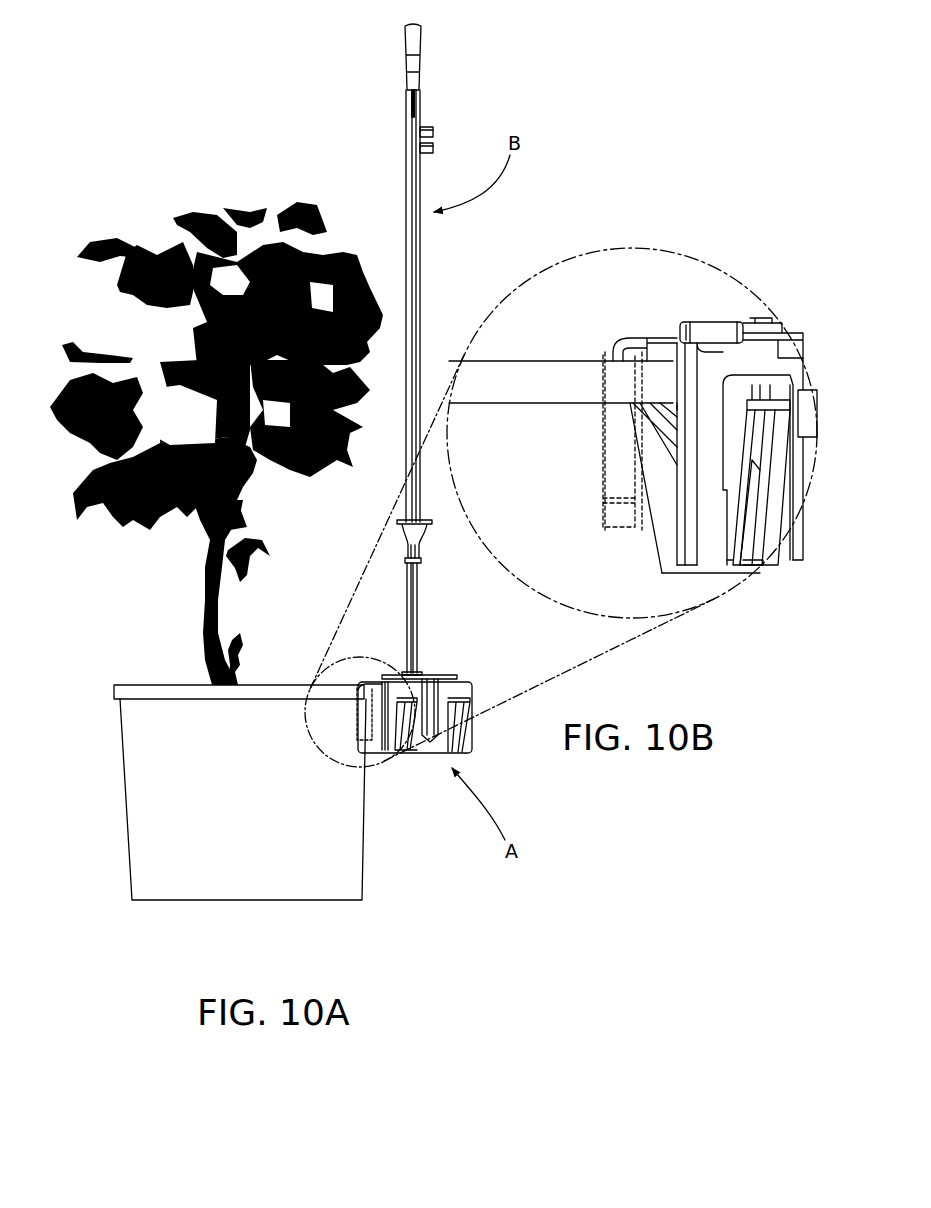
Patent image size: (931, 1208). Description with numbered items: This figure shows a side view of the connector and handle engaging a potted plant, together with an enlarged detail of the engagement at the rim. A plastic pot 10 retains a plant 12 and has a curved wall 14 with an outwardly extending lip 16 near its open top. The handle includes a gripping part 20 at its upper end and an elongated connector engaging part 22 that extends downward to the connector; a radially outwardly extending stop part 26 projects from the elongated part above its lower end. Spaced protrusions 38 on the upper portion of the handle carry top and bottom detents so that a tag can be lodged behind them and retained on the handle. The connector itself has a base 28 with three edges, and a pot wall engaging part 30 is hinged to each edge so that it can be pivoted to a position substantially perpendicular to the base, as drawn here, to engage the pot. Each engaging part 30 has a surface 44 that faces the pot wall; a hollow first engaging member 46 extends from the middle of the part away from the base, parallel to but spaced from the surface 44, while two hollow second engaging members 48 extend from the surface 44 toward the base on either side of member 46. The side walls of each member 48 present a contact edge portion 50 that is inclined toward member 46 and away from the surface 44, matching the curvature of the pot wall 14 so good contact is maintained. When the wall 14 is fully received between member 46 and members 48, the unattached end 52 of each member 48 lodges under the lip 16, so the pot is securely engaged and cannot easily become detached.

In FIG. 10A, the pot 10 is at (122, 866).
In FIG. 10A, the plant 12 is at (127, 505).
In FIG. 10A, the curved wall 14 is at (268, 783).
In FIG. 10B, the curved wall 14 is at (523, 489).
In FIG. 10A, the lip 16 is at (117, 693).
In FIG. 10B, the lip 16 is at (553, 380).
In FIG. 10A, the gripping part 20 is at (425, 48).
In FIG. 10A, the elongated connector engaging part 22 is at (418, 290).
In FIG. 10A, the stop part 26 is at (430, 530).
In FIG. 10A, the base 28 is at (414, 712).
In FIG. 10B, the base 28 is at (727, 447).
In FIG. 10B, the pot wall engaging part 30 is at (775, 320).
In FIG. 10A, the protrusion 38 is at (432, 128).
In FIG. 10B, the surface 44 is at (605, 358).
In FIG. 10B, the first engaging member 46 is at (620, 470).
In FIG. 10B, the second engaging member 48 is at (650, 440).
In FIG. 10B, the contact edge portion 50 is at (655, 535).
In FIG. 10B, the unattached end 52 is at (633, 413).